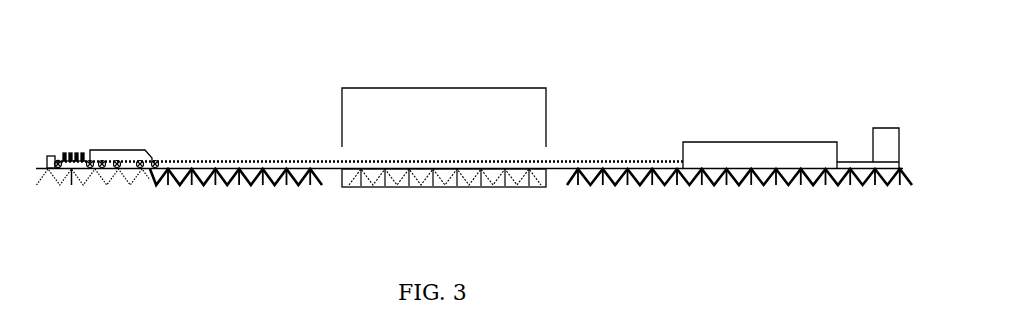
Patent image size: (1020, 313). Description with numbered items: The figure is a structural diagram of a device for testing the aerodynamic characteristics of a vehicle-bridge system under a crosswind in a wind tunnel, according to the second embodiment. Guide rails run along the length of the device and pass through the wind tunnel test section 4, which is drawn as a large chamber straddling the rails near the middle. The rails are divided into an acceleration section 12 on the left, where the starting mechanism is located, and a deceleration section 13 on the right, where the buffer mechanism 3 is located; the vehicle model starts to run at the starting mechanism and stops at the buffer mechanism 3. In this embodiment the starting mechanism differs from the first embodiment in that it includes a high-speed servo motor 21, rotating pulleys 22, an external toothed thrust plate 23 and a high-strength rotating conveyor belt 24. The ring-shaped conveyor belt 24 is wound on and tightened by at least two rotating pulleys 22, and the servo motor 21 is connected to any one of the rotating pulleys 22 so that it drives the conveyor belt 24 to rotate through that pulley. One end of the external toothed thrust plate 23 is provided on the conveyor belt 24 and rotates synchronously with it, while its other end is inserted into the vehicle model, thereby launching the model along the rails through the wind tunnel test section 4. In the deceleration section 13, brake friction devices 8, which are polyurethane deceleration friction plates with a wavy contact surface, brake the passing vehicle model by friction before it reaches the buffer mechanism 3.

The buffer mechanism 3 is at (883, 124).
The wind tunnel test section 4 is at (435, 87).
The brake friction devices 8 is at (752, 152).
The acceleration section 12 is at (244, 152).
The deceleration section 13 is at (590, 155).
The high-speed servo motor 21 is at (50, 156).
The rotating pulleys 22 is at (130, 158).
The external toothed thrust plate 23 is at (73, 157).
The high-strength rotating conveyor belt 24 is at (158, 160).